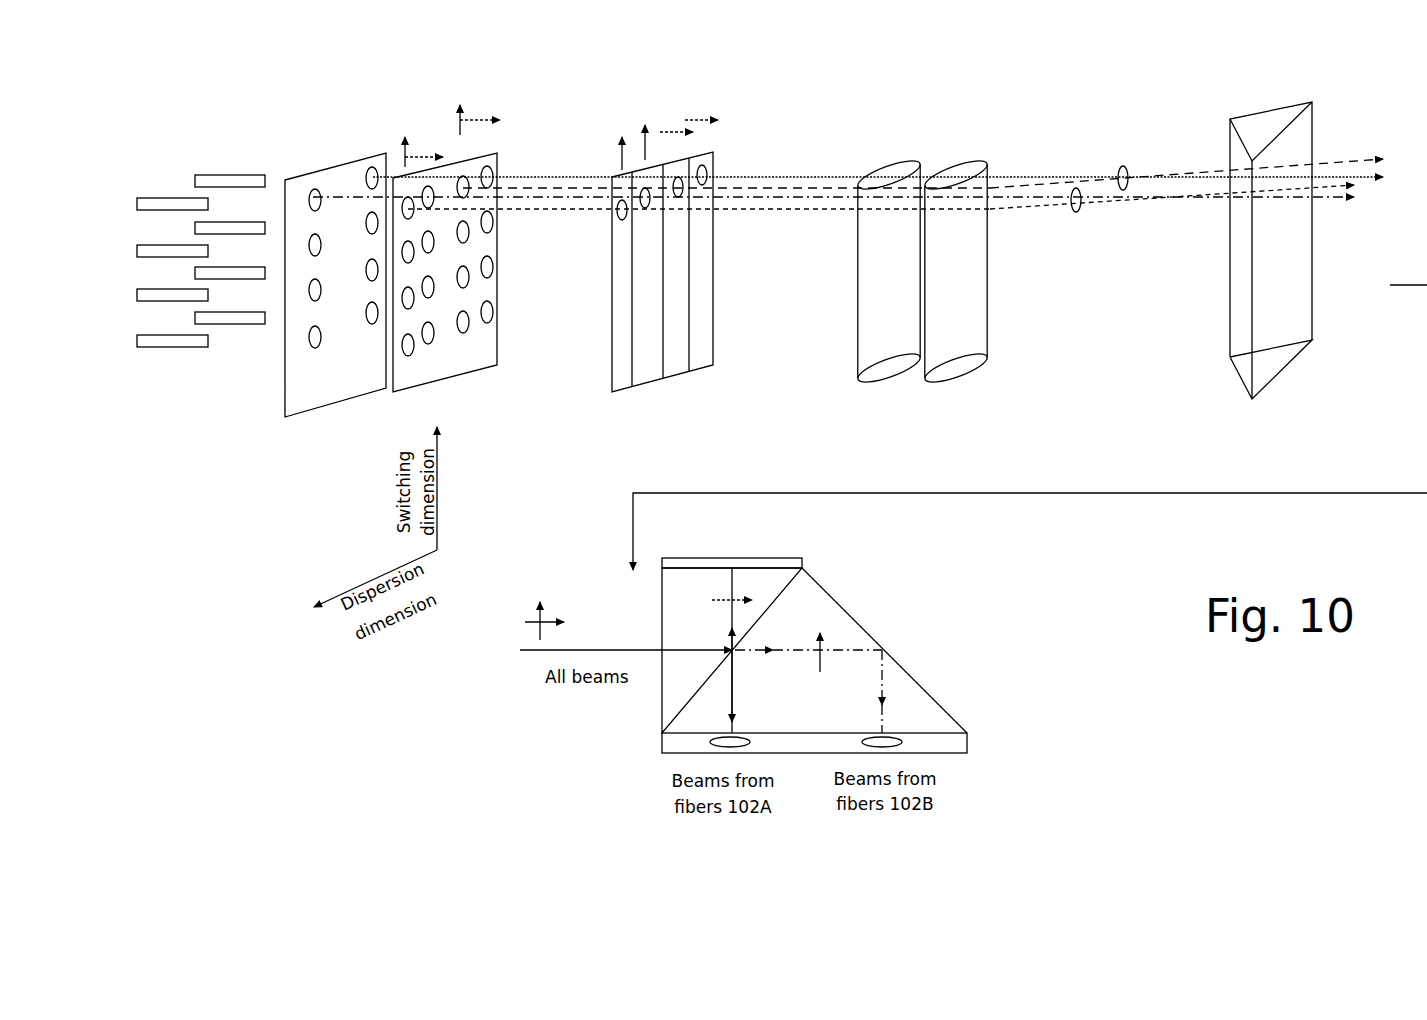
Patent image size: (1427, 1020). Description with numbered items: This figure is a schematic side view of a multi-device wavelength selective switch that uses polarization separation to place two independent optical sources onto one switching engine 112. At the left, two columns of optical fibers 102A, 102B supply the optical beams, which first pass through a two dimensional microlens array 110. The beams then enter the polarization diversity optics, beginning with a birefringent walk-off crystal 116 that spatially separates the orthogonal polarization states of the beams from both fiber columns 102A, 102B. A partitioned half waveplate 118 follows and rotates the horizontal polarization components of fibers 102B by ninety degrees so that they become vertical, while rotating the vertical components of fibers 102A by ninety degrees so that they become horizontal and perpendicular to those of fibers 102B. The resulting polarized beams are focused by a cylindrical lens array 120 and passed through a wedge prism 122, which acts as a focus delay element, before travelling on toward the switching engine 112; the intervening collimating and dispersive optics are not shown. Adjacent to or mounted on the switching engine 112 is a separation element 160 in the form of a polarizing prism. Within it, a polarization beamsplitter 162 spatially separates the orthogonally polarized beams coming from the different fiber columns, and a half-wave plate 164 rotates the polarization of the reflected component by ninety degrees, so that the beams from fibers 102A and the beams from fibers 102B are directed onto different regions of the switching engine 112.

The column of optical fibers 102A is at (205, 125).
The column of optical fibers 102B is at (170, 198).
The microlens array 110 is at (235, 175).
The birefringent walk-off crystal 116 is at (395, 177).
The partitioned half waveplate 118 is at (614, 177).
The cylindrical lens array 120 is at (975, 162).
The wedge prism 122 is at (1262, 128).
The switching engine 112 is at (952, 753).
The separation element 160 is at (840, 610).
The polarization beamsplitter 162 is at (763, 585).
The half-wave plate 164 is at (718, 560).